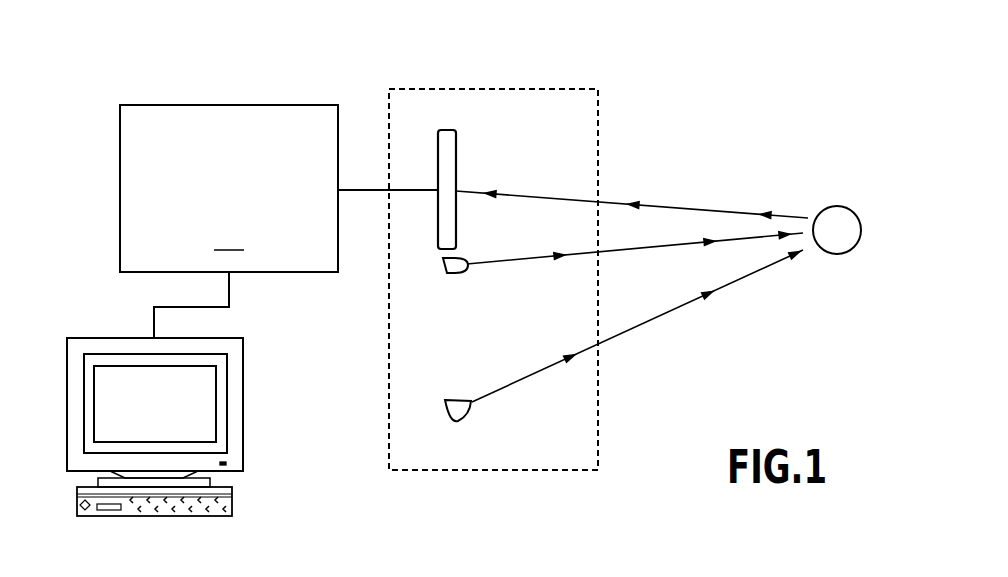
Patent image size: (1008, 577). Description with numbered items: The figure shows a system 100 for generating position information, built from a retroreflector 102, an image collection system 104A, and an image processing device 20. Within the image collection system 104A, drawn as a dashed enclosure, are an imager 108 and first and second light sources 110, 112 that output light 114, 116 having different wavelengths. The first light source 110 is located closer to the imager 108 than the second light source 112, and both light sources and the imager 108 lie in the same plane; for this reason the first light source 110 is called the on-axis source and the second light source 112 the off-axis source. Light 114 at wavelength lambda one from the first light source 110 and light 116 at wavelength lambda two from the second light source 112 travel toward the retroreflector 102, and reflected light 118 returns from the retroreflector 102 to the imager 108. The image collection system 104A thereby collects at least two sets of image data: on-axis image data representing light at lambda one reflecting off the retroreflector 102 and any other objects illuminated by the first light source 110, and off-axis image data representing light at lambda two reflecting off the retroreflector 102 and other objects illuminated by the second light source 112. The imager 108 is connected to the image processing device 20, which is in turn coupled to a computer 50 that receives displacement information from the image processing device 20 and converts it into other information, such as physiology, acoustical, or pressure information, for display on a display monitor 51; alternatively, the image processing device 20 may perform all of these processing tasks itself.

The system for generating position information 100 is at (283, 47).
The image processing device 20 is at (279, 221).
The computer 50 is at (238, 368).
The display monitor 51 is at (113, 389).
The image collection system 104A is at (600, 112).
The imager 108 is at (448, 131).
The first light source 110 is at (445, 274).
The second light source 112 is at (447, 400).
The light 114 is at (692, 249).
The light 116 is at (653, 322).
The reflected light 118 is at (671, 205).
The retroreflector 102 is at (835, 206).